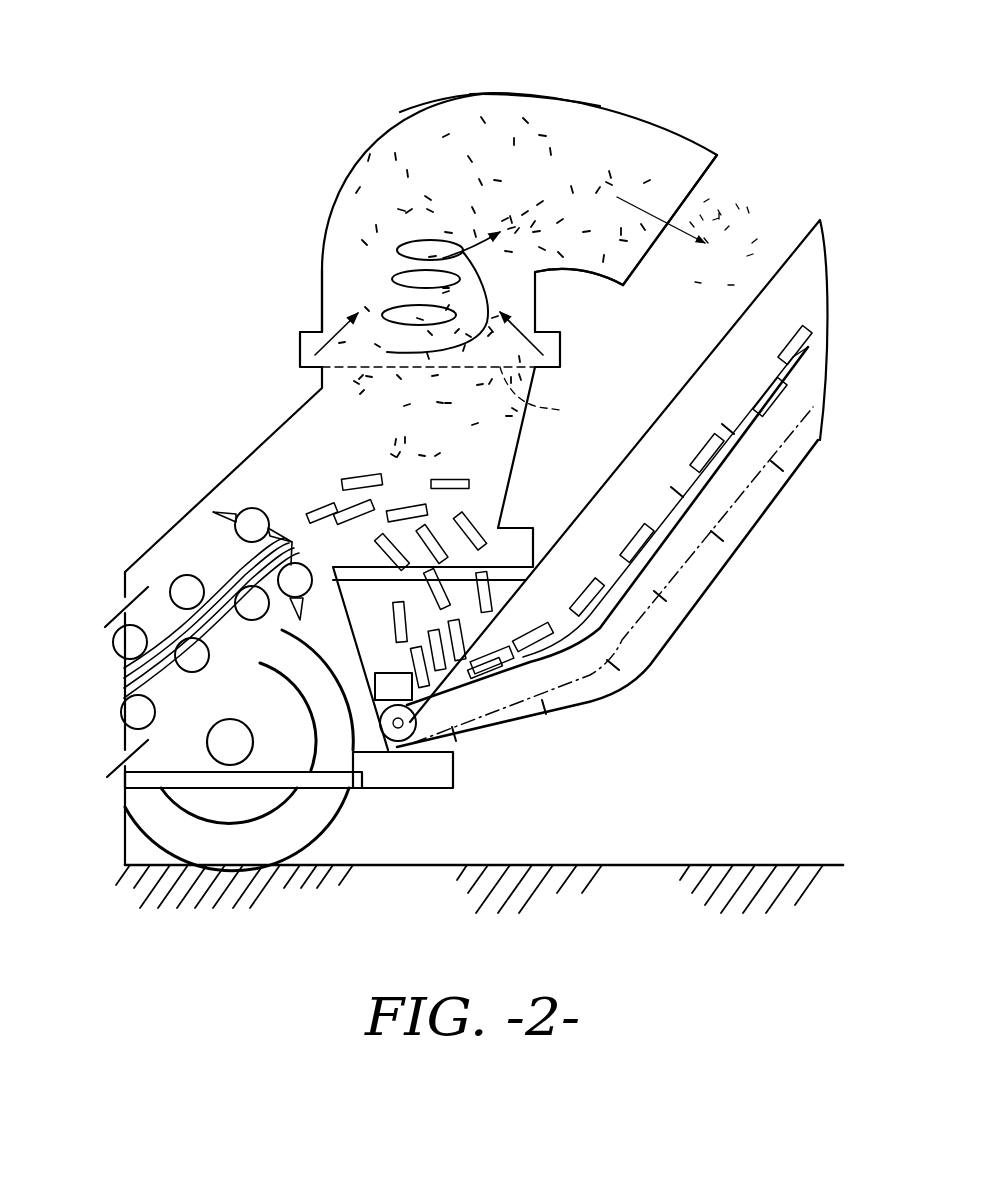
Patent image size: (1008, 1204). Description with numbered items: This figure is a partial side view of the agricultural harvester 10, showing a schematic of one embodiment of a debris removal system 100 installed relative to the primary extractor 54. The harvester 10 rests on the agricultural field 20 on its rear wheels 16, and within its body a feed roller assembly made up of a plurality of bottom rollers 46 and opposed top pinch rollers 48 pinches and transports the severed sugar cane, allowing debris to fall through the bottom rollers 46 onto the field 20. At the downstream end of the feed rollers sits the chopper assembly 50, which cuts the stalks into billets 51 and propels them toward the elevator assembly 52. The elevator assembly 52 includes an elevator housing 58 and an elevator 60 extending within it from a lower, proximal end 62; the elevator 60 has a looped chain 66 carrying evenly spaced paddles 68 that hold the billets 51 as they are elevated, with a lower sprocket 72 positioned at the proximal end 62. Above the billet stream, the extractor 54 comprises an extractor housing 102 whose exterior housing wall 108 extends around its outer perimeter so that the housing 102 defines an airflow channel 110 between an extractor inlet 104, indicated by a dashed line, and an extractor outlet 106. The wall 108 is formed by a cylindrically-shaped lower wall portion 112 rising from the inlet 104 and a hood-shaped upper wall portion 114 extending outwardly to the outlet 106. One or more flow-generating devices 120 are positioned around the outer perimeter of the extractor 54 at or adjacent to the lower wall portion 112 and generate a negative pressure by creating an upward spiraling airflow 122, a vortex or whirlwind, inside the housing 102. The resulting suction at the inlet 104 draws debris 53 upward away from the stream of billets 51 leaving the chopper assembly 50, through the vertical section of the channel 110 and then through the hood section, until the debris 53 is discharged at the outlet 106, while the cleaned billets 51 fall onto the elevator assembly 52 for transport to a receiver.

The harvester 10 is at (88, 580).
The rear wheels 16 is at (275, 832).
The agricultural field 20 is at (632, 862).
The bottom rollers 46 is at (135, 712).
The top pinch rollers 48 is at (125, 643).
The chopper assembly 50 is at (248, 497).
The billets 51 is at (470, 484).
The elevator assembly 52 is at (733, 560).
The debris 53 is at (548, 142).
The primary extractor 54 is at (390, 115).
The elevator housing 58 is at (768, 507).
The elevator 60 is at (792, 392).
The proximal end 62 is at (473, 747).
The looped chain 66 is at (673, 570).
The paddles 68 is at (783, 375).
The lower sprocket 72 is at (400, 735).
The debris removal system 100 is at (198, 166).
The extractor housing 102 is at (343, 187).
The extractor inlet 104 is at (366, 469).
The extractor outlet 106 is at (705, 178).
The exterior housing wall 108 is at (343, 187).
The airflow channel 110 is at (490, 197).
The lower wall portion 112 is at (322, 300).
The upper wall portion 114 is at (492, 96).
The flow-generating devices 120 is at (300, 350).
The upward spiraling airflow 122 is at (392, 280).